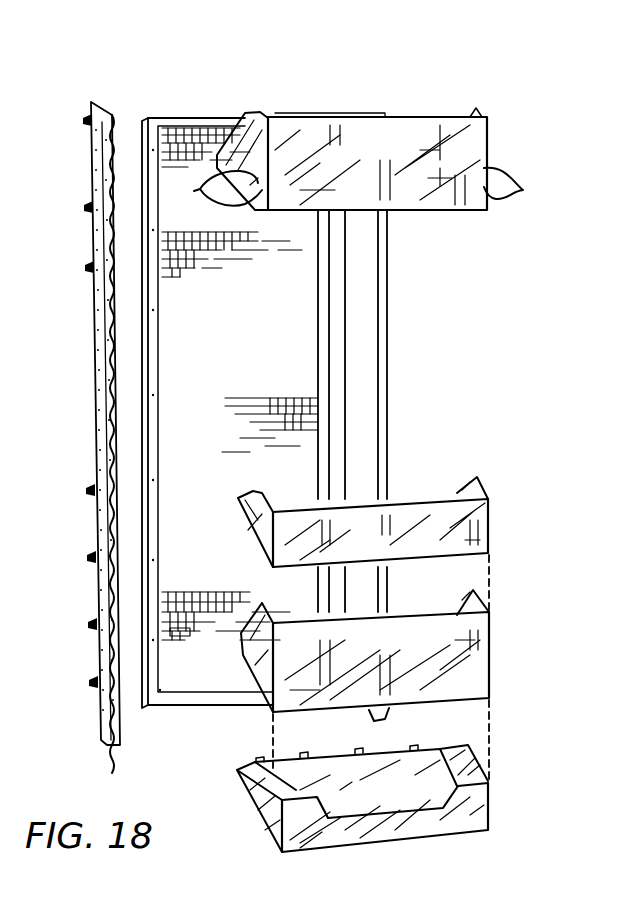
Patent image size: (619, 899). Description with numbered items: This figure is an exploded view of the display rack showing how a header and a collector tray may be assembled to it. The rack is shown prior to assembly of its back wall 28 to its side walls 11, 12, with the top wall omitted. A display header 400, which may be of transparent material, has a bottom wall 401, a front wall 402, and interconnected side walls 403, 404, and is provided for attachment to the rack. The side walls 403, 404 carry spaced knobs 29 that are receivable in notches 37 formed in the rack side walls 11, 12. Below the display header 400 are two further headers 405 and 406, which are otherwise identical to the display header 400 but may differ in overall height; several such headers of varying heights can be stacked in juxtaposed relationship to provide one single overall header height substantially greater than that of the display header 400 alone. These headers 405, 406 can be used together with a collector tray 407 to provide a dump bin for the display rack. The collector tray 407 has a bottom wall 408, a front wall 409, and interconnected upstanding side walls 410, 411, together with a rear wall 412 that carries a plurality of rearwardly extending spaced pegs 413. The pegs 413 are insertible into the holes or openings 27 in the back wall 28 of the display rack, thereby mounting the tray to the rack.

The side wall 11 is at (96, 266).
The side wall 12 is at (390, 314).
The holes or openings 27 is at (180, 627).
The back wall 28 is at (235, 368).
The spaced knobs 29 is at (361, 187).
The notches 37 is at (150, 400).
The display header 400 is at (375, 152).
The bottom wall 401 is at (442, 195).
The front wall 402 is at (342, 116).
The side wall 403 is at (224, 143).
The side wall 404 is at (476, 114).
The header 405 is at (374, 540).
The header 406 is at (365, 670).
The collector tray 407 is at (390, 800).
The bottom wall 408 is at (382, 808).
The front wall 409 is at (378, 832).
The upstanding side wall 410 is at (265, 795).
The upstanding side wall 411 is at (484, 768).
The rear wall 412 is at (400, 752).
The pegs 413 is at (368, 750).